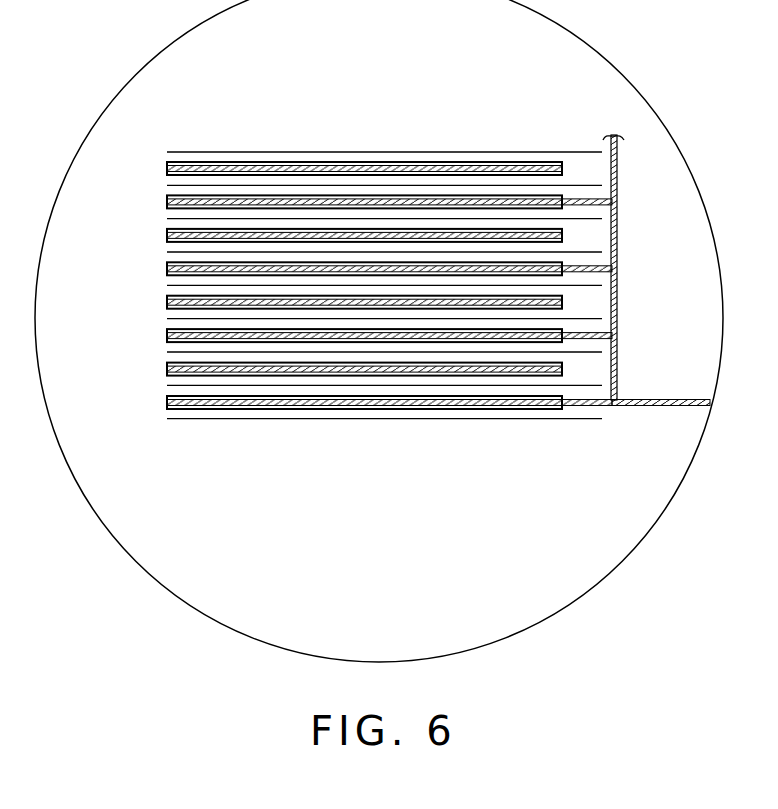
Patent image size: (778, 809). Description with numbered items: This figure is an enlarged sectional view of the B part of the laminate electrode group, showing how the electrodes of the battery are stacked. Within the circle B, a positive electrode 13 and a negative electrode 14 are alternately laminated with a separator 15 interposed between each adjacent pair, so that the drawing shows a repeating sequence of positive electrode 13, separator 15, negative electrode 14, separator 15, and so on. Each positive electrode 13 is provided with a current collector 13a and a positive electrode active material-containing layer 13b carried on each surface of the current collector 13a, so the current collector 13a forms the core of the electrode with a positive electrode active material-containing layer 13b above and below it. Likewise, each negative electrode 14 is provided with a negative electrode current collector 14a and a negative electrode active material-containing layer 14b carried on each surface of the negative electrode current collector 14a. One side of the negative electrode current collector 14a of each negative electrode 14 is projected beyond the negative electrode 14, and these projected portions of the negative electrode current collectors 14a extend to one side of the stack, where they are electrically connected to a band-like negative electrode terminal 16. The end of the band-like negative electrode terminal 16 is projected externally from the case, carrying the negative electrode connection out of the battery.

The positive electrode 13 is at (304, 293).
The current collector 13a is at (170, 370).
The positive electrode active material-containing layer 13b is at (170, 363).
The negative electrode 14 is at (380, 317).
The negative electrode current collector 14a is at (585, 198).
The negative electrode active material-containing layer 14b is at (173, 397).
The separator 15 is at (440, 150).
The band-like negative electrode terminal 16 is at (663, 407).
The B part B is at (615, 570).